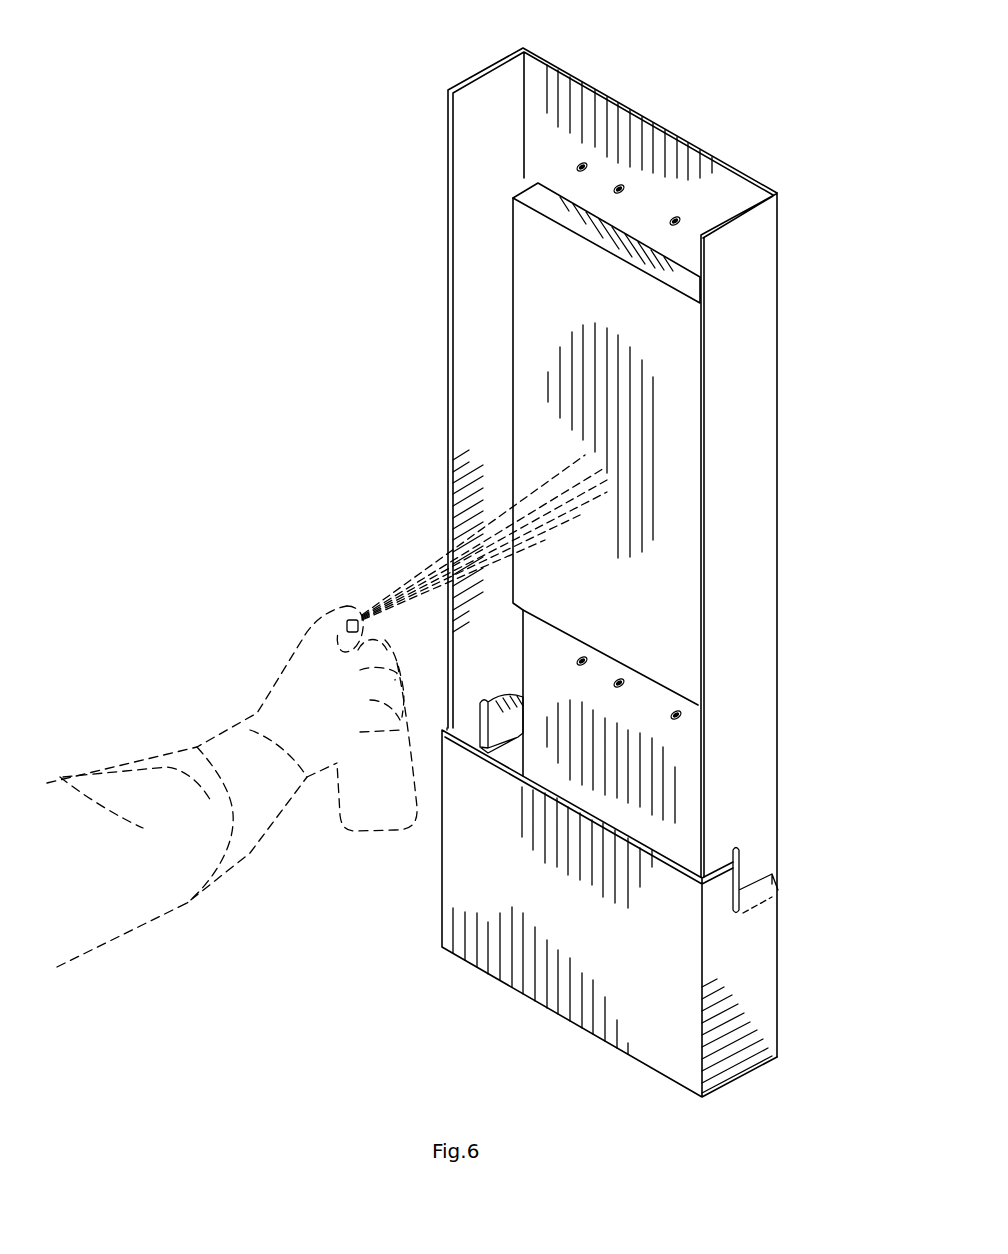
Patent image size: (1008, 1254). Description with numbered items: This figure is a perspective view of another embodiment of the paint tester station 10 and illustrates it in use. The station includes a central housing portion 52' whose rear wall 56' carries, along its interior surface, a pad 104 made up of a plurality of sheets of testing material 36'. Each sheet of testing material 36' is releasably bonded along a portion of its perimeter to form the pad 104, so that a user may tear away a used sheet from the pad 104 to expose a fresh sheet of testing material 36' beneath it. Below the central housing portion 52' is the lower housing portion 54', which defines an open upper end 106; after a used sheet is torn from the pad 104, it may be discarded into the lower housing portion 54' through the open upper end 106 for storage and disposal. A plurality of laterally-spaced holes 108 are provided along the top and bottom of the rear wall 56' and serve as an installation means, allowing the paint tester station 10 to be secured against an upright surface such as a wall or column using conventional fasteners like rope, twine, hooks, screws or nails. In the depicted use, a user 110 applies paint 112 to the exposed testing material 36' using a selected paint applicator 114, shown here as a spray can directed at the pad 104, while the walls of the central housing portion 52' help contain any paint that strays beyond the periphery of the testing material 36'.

The paint tester station 10 is at (770, 104).
The pad 104 is at (687, 267).
The central housing portion 52' is at (801, 625).
The testing material 36' is at (696, 385).
The holes 108 is at (582, 163).
The rear wall 56' is at (697, 716).
The open upper end 106 is at (682, 850).
The lower housing portion 54' is at (674, 913).
The user 110 is at (133, 757).
The paint 112 is at (433, 572).
The paint applicator 114 is at (347, 820).